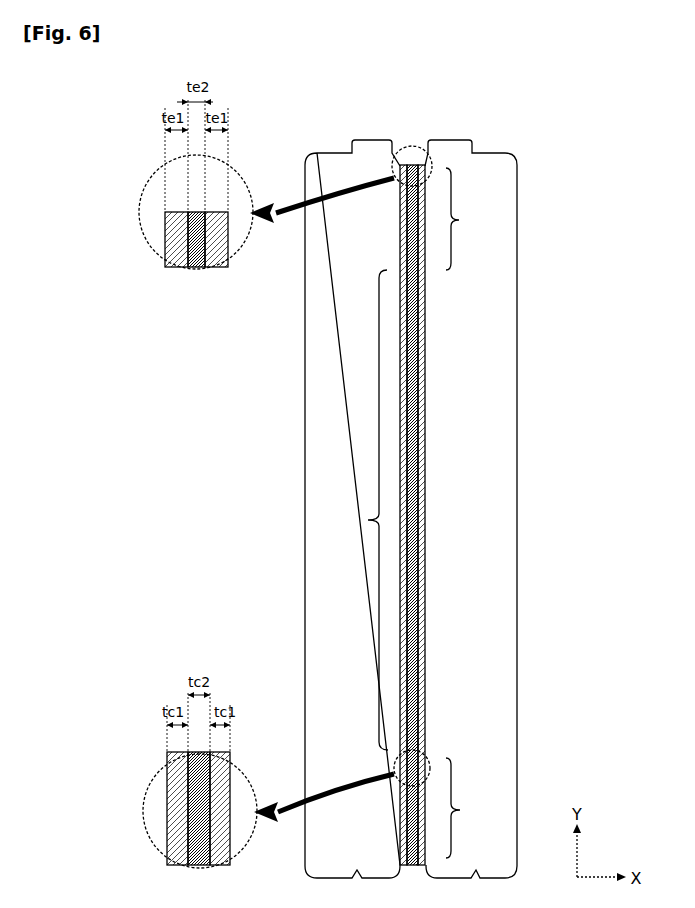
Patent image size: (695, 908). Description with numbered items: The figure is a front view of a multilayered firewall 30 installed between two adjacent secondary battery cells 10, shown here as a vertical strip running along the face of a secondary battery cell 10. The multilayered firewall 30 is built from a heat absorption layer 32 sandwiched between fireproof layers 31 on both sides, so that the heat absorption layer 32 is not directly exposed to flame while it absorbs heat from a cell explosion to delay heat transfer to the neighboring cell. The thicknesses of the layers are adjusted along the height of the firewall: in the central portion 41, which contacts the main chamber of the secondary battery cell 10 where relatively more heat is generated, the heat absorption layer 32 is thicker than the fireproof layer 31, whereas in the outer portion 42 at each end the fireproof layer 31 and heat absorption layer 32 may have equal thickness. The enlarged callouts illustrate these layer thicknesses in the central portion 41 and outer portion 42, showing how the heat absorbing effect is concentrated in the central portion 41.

The secondary battery cell 10 is at (490, 255).
The multilayered firewall 30 is at (500, 515).
The fireproof layer 31 is at (425, 296).
The heat absorption layer 32 is at (425, 318).
The central portion 41 is at (365, 524).
The outer portion 42 is at (460, 207).